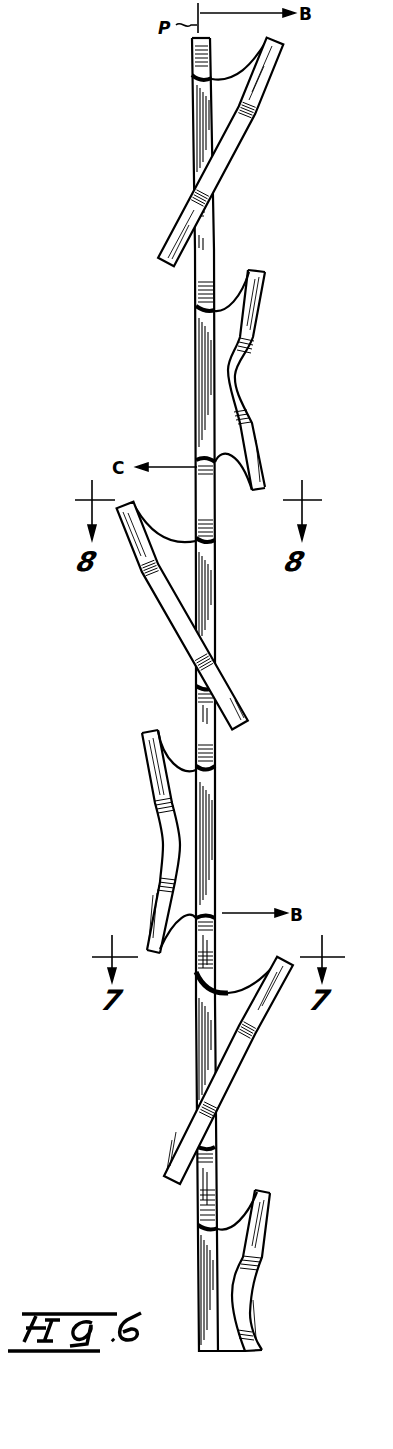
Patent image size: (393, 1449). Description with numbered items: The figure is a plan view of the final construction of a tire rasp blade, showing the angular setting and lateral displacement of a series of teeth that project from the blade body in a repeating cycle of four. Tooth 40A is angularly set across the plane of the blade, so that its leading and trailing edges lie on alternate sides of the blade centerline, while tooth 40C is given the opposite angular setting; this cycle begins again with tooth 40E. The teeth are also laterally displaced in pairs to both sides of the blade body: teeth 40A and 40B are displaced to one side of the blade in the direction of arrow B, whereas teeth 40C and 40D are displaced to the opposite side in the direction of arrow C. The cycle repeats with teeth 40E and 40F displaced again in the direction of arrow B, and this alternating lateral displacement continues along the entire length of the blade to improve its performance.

The tooth 40A is at (178, 230).
The tooth 40B is at (214, 338).
The tooth 40C is at (236, 701).
The tooth 40D is at (188, 866).
The tooth 40E is at (178, 1152).
The tooth 40F is at (220, 1248).